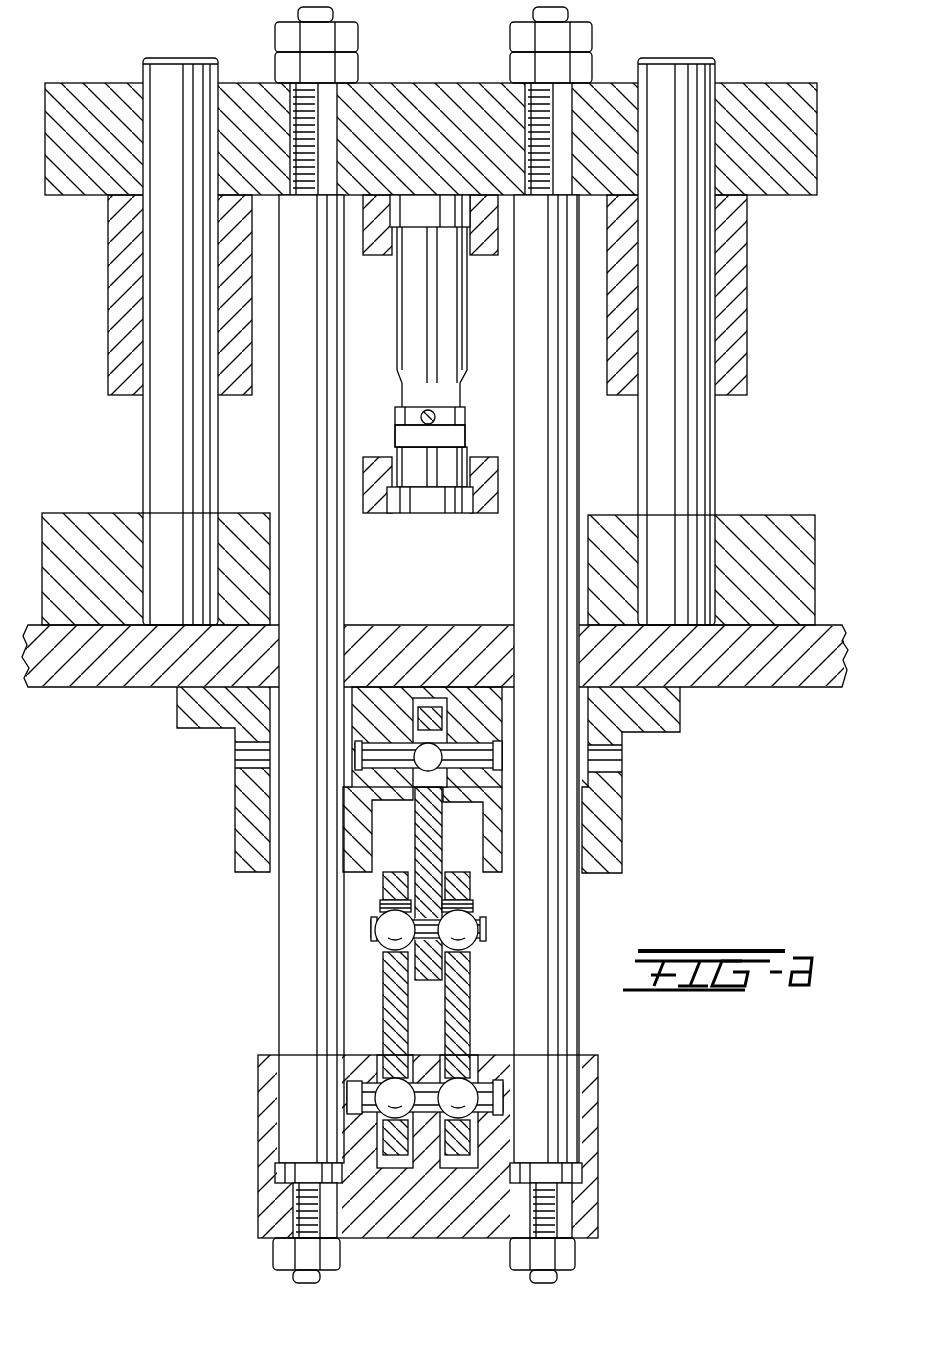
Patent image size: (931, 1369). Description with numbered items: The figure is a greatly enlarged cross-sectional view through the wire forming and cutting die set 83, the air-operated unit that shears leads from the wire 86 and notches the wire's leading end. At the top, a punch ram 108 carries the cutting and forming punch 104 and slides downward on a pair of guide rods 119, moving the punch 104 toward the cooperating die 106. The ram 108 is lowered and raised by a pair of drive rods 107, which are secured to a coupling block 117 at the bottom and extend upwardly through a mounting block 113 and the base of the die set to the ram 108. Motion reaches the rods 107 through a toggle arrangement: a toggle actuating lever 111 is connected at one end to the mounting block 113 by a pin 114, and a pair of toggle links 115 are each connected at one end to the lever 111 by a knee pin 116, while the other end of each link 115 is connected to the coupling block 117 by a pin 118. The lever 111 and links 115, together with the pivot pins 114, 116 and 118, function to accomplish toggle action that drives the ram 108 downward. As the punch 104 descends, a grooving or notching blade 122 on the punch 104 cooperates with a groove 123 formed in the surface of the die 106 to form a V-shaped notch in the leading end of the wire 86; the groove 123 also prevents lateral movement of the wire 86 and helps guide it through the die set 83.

The wire forming and cutting die set 83 is at (647, 52).
The punch ram 108 is at (396, 83).
The guide rods 119 is at (143, 430).
The drive rods 107 is at (284, 435).
The cutting and forming punch 104 is at (458, 342).
The grooving or notching blade 122 is at (420, 410).
The groove 123 is at (436, 410).
The cooperating die 106 is at (395, 448).
The wire 86 is at (445, 415).
The mounting block 113 is at (613, 808).
The pin 114 is at (393, 750).
The toggle actuating lever 111 is at (438, 865).
The knee pin 116 is at (482, 928).
The toggle links 115 is at (383, 1017).
The pin 118 is at (480, 1077).
The coupling block 117 is at (590, 1140).